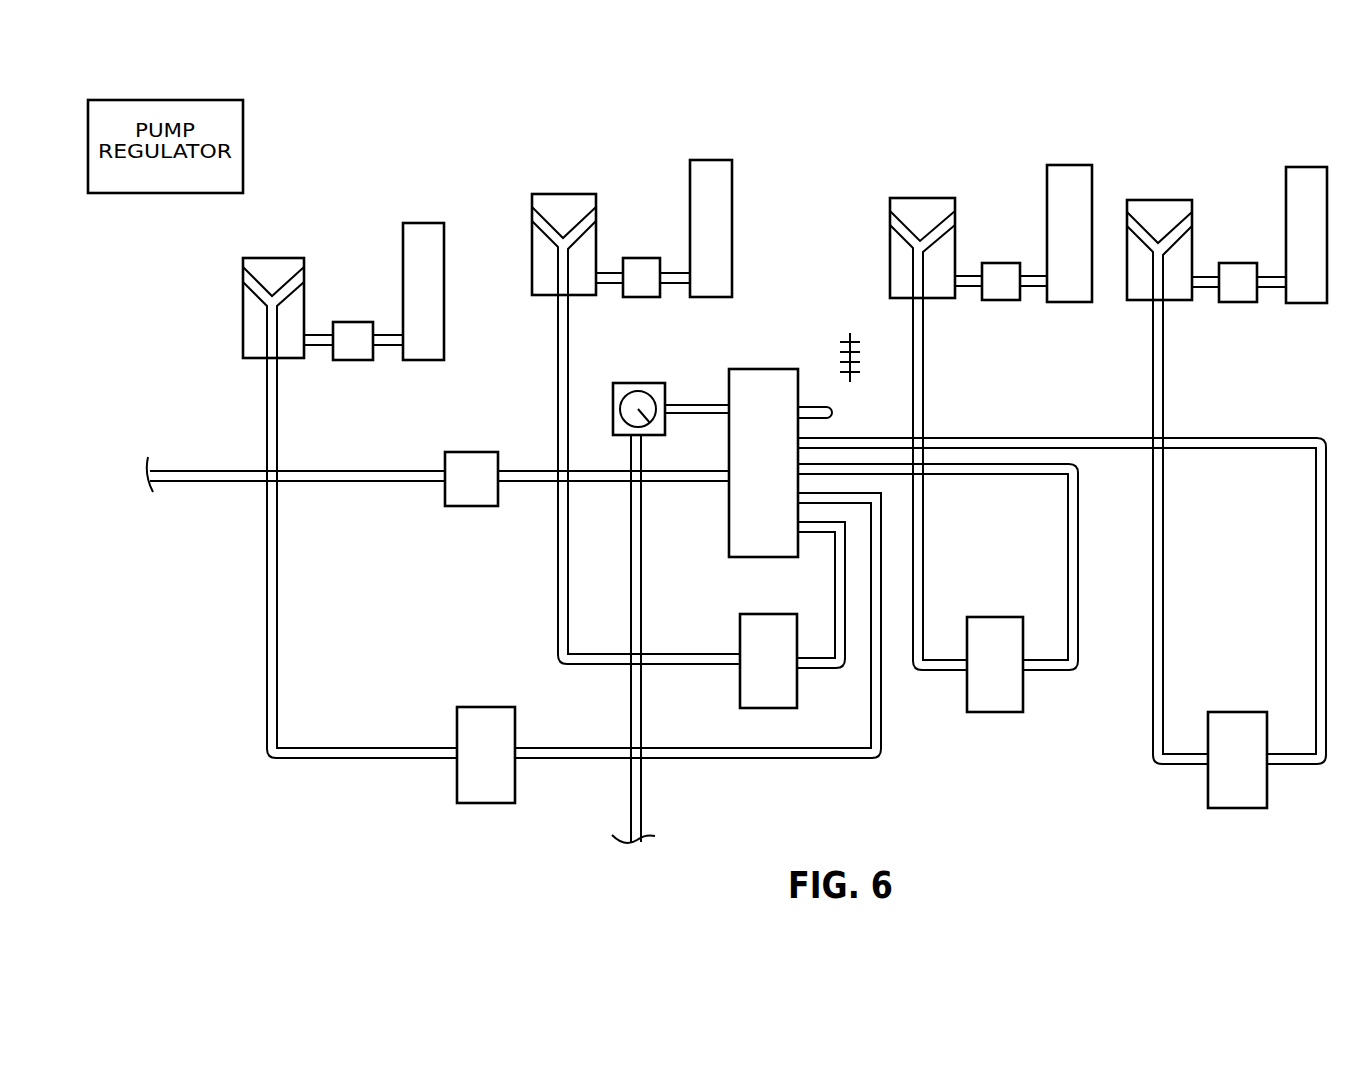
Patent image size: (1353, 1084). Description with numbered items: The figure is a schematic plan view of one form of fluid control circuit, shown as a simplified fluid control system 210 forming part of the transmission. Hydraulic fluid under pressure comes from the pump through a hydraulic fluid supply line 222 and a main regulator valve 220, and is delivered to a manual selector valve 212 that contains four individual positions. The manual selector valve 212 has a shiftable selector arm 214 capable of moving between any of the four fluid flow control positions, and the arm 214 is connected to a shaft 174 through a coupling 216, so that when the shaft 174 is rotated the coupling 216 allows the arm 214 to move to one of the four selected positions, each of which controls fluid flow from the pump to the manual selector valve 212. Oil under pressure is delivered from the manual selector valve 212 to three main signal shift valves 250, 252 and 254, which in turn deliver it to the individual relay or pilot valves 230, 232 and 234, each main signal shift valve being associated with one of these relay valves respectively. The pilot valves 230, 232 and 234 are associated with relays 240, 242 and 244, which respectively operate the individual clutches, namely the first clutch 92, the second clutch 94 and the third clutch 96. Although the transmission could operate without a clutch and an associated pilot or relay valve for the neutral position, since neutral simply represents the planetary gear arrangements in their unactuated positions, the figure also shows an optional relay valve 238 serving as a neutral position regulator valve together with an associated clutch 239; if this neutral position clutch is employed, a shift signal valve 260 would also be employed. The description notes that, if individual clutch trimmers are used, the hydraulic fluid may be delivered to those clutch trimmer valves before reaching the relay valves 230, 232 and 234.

The first clutch 92 is at (1072, 163).
The second clutch 94 is at (707, 160).
The third clutch 96 is at (427, 222).
The shaft 174 is at (643, 598).
The fluid control system 210 is at (812, 220).
The manual selector valve 212 is at (770, 368).
The shiftable selector arm 214 is at (710, 402).
The coupling 216 is at (623, 382).
The main regulator valve 220 is at (472, 450).
The hydraulic fluid supply line 222 is at (223, 470).
The shift signal valve 230 is at (930, 197).
The shift signal valve 232 is at (567, 193).
The shift signal valve 234 is at (278, 256).
The relay valve 238 is at (1158, 198).
The clutch 239 is at (1303, 165).
The relay 240 is at (1002, 260).
The relay 242 is at (645, 258).
The relay 244 is at (353, 320).
The main signal shift valve 250 is at (988, 617).
The main signal shift valve 252 is at (765, 613).
The main signal shift valve 254 is at (487, 707).
The shift signal valve 260 is at (1227, 710).